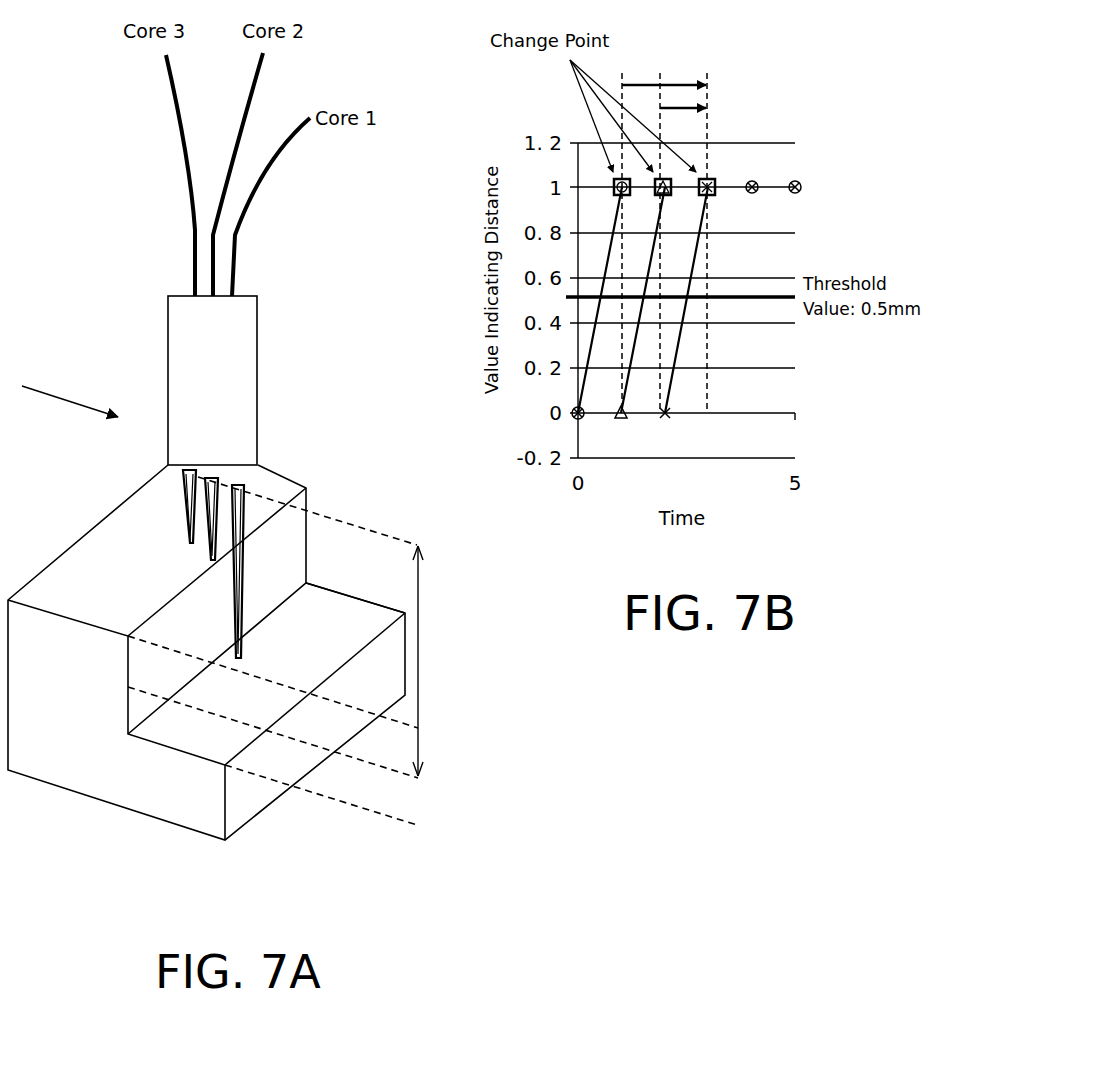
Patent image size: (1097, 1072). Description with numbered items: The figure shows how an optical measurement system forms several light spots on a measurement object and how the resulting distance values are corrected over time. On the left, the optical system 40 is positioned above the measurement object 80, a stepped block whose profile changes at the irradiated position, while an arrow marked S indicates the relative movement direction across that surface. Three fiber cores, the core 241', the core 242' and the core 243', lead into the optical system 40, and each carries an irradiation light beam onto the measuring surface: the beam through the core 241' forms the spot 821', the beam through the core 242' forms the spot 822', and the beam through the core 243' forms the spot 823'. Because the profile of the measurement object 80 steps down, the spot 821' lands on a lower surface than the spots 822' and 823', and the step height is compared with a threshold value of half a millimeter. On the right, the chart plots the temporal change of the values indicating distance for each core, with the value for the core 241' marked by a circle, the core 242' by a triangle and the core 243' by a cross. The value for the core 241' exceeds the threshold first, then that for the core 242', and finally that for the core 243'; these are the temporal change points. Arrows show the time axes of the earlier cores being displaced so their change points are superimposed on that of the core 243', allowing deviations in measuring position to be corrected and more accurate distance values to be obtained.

The optical system 40 is at (258, 365).
The measurement object 80 is at (60, 562).
The core 241' is at (290, 207).
The core 242' is at (268, 174).
The core 243' is at (150, 175).
The spot 821' is at (278, 583).
The spot 822' is at (170, 539).
The spot 823' is at (147, 517).
The scanning direction S is at (65, 396).